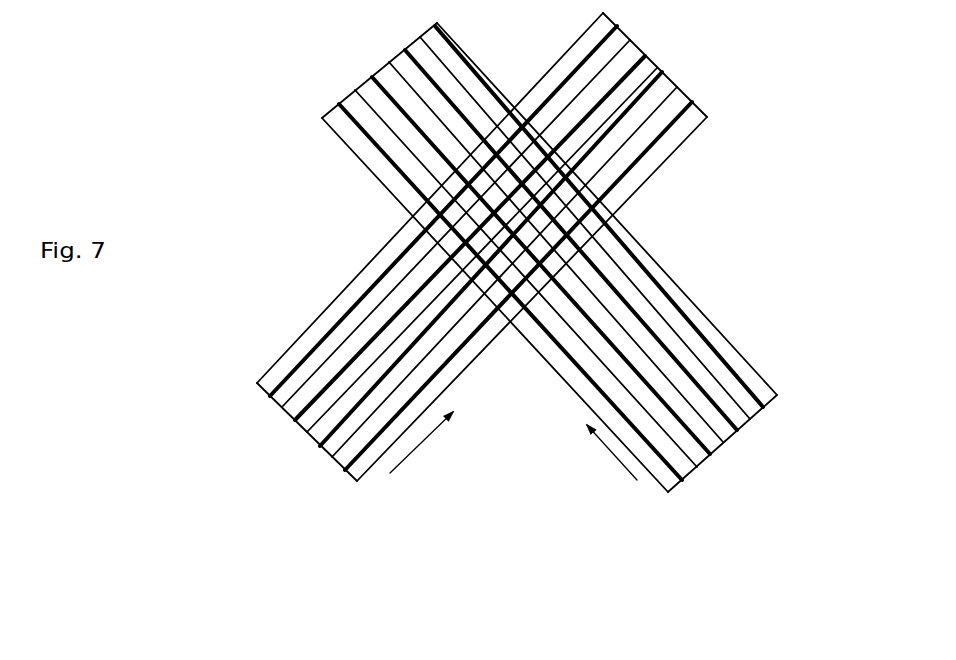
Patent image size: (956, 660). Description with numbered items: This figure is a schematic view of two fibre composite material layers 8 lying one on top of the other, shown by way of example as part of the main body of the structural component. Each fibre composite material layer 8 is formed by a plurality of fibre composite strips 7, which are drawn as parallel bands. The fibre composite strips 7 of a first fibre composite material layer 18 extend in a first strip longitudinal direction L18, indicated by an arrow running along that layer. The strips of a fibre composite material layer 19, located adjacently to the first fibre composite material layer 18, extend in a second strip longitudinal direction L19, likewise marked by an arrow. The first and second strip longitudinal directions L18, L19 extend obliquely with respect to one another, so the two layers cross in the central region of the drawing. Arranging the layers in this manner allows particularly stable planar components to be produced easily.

The fibre composite strip 7 is at (258, 383).
The fibre composite material layer 8 is at (721, 251).
The first fibre composite material layer 18 is at (278, 254).
The fibre composite material layer 19 is at (757, 311).
The first strip longitudinal direction L18 is at (405, 458).
The second strip longitudinal direction L19 is at (636, 481).